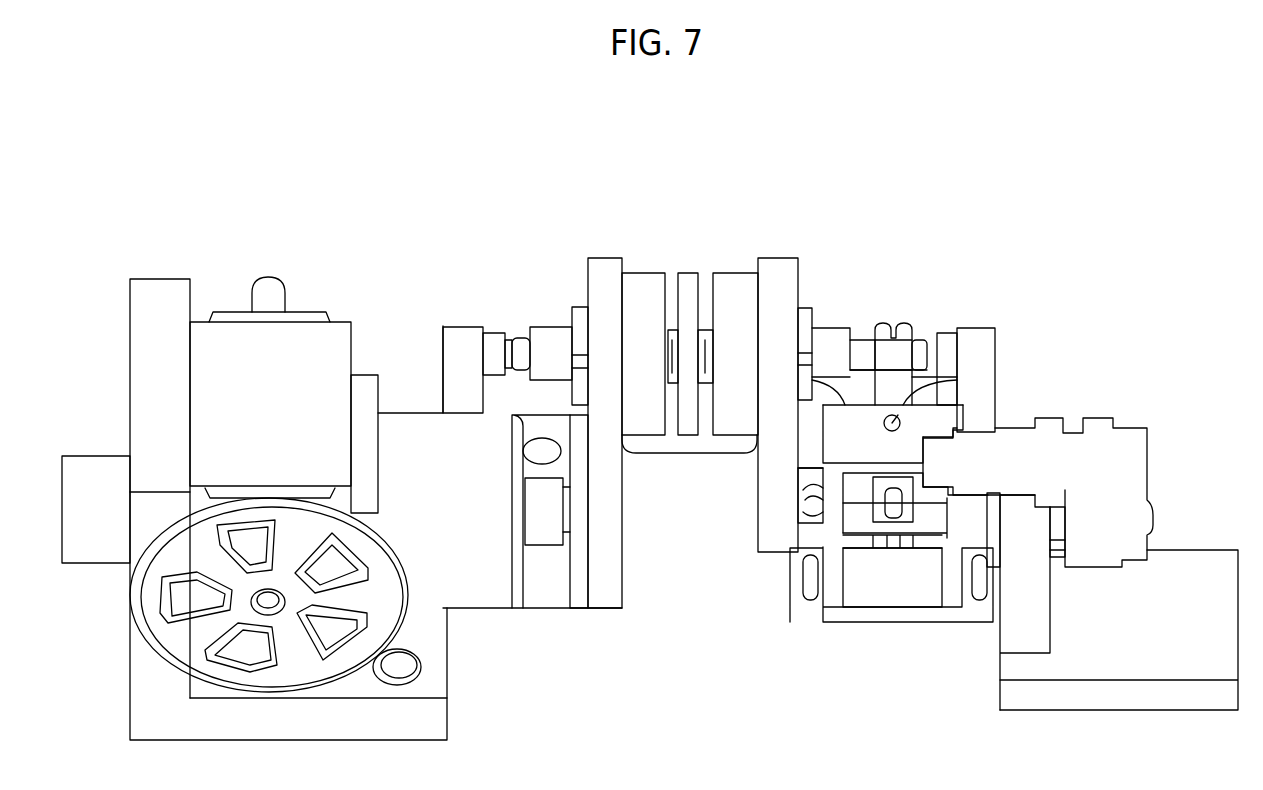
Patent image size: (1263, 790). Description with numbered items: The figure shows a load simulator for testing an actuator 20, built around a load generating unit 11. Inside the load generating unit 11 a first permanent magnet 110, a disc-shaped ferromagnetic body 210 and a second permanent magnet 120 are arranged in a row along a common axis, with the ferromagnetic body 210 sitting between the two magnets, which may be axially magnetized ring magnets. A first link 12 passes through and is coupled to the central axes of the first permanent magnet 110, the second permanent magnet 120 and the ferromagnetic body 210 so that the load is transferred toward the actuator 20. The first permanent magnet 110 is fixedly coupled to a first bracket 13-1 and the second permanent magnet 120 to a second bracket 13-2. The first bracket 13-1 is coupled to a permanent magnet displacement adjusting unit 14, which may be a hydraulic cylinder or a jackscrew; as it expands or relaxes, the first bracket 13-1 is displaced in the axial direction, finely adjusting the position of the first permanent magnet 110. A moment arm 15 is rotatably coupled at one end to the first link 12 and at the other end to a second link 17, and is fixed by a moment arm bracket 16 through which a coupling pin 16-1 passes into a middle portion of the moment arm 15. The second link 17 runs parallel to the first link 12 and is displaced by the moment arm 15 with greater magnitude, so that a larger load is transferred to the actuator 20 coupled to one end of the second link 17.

The load generating unit 11 is at (697, 457).
The first permanent magnet 110 is at (639, 264).
The ferromagnetic body 210 is at (688, 262).
The second permanent magnet 120 is at (742, 262).
The first bracket 13-1 is at (600, 282).
The second bracket 13-2 is at (787, 265).
The first link 12 is at (862, 340).
The permanent magnet displacement adjusting unit 14 is at (487, 595).
The moment arm 15 is at (893, 390).
The moment arm bracket 16 is at (830, 528).
The coupling pin 16-1 is at (950, 380).
The second link 17 is at (865, 525).
The actuator 20 is at (1120, 472).